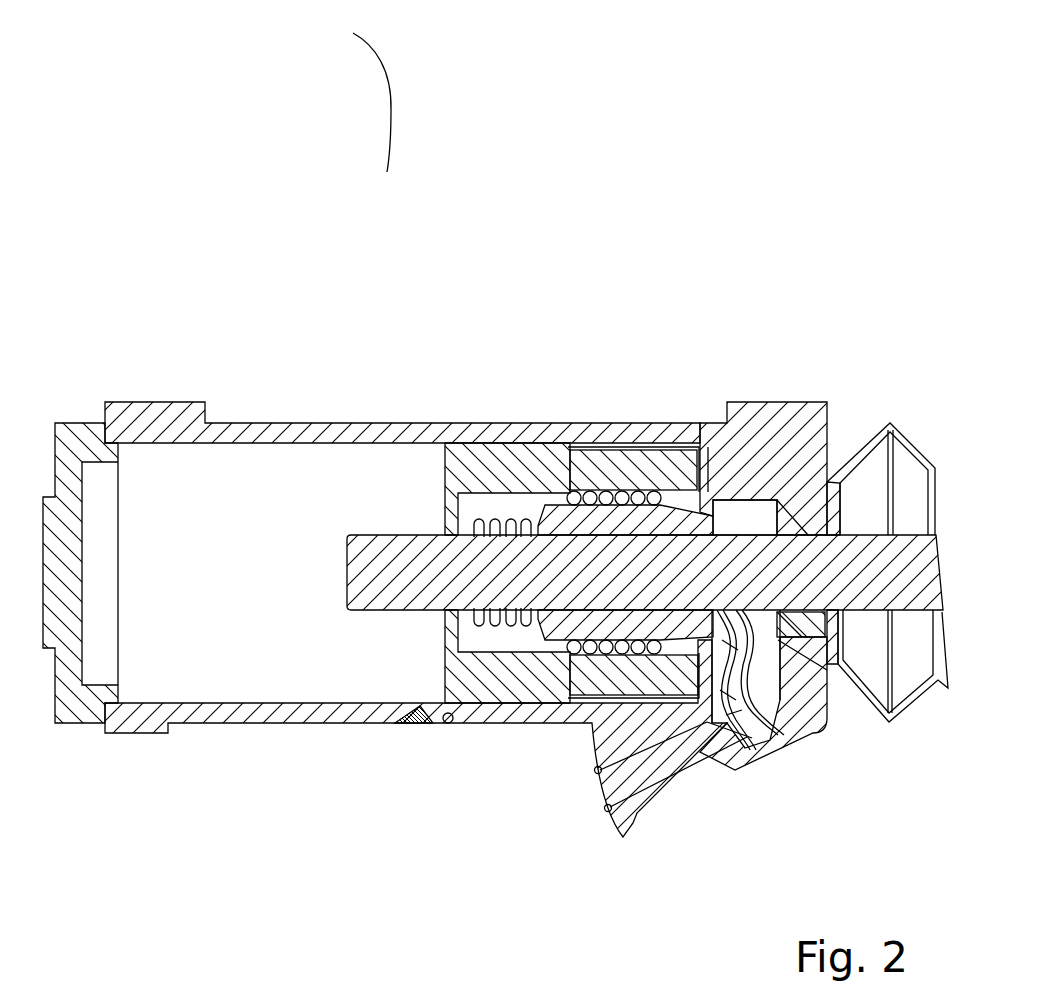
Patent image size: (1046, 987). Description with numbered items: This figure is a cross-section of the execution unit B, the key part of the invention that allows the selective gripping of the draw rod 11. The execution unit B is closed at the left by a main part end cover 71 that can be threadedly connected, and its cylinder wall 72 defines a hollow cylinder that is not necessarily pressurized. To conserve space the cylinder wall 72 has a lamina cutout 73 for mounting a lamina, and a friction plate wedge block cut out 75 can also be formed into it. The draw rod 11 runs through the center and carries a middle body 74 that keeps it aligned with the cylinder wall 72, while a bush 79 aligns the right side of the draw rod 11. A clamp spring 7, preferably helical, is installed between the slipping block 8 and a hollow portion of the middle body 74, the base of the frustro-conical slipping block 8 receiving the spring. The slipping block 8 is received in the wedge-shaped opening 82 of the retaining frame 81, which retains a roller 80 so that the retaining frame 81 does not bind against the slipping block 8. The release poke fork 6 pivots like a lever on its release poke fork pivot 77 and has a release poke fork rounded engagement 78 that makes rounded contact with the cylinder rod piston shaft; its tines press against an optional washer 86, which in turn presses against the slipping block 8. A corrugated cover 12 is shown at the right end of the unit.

The execution unit B is at (358, 94).
The release poke fork 6 is at (776, 637).
The clamp spring 7 is at (477, 517).
The slipping block 8 is at (722, 516).
The draw rod 11 is at (367, 585).
The corrugated cover 12 is at (912, 433).
The main part end cover 71 is at (84, 723).
The cylinder wall 72 is at (438, 715).
The lamina cutout 73 is at (447, 722).
The middle body 74 is at (500, 470).
The friction plate wedge block cut out 75 is at (465, 723).
The release poke fork pivot 77 is at (772, 702).
The release poke fork rounded engagement 78 is at (758, 743).
The bush 79 is at (800, 510).
The roller 80 is at (647, 497).
The retaining frame 81 is at (576, 450).
The wedge-shaped opening of retaining frame 82 is at (628, 497).
The washer 86 is at (800, 732).